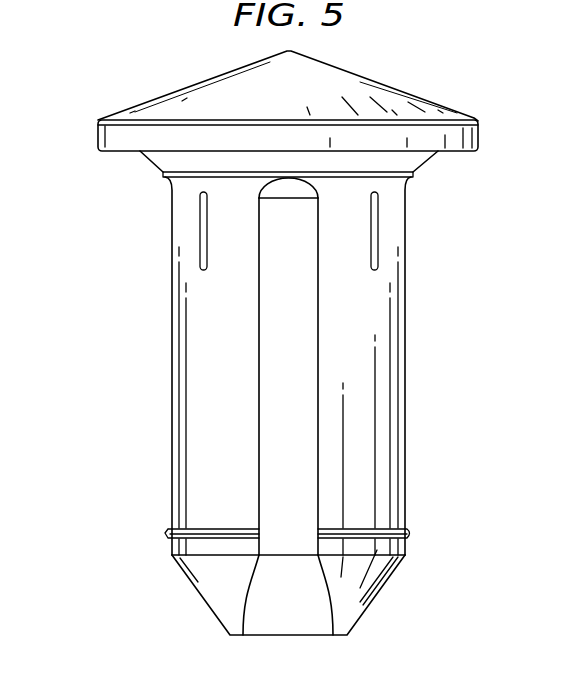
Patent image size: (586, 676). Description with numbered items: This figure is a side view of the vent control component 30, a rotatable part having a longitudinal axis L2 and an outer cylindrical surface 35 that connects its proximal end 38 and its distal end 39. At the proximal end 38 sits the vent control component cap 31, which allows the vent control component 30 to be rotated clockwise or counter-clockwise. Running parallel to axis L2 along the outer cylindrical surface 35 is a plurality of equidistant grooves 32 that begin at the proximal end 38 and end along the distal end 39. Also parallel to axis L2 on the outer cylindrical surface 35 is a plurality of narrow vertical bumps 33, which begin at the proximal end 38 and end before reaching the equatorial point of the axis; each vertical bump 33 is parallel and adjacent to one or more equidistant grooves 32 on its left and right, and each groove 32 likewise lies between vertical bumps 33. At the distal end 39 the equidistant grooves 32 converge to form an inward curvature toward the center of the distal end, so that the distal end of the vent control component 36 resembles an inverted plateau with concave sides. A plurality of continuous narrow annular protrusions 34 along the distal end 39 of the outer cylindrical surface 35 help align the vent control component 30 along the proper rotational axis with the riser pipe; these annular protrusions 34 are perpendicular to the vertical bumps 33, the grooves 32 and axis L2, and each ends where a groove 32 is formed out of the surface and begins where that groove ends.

The vent control component 30 is at (136, 135).
The vent control component cap 31 is at (328, 93).
The equidistant grooves 32 is at (298, 460).
The narrow vertical bumps 33 is at (373, 217).
The continuous narrow annular protrusions 34 is at (172, 530).
The outer cylindrical surface 35 is at (353, 342).
The vent control component distal end shape 36 is at (345, 603).
The proximal end 38 is at (228, 223).
The distal end 39 is at (225, 547).